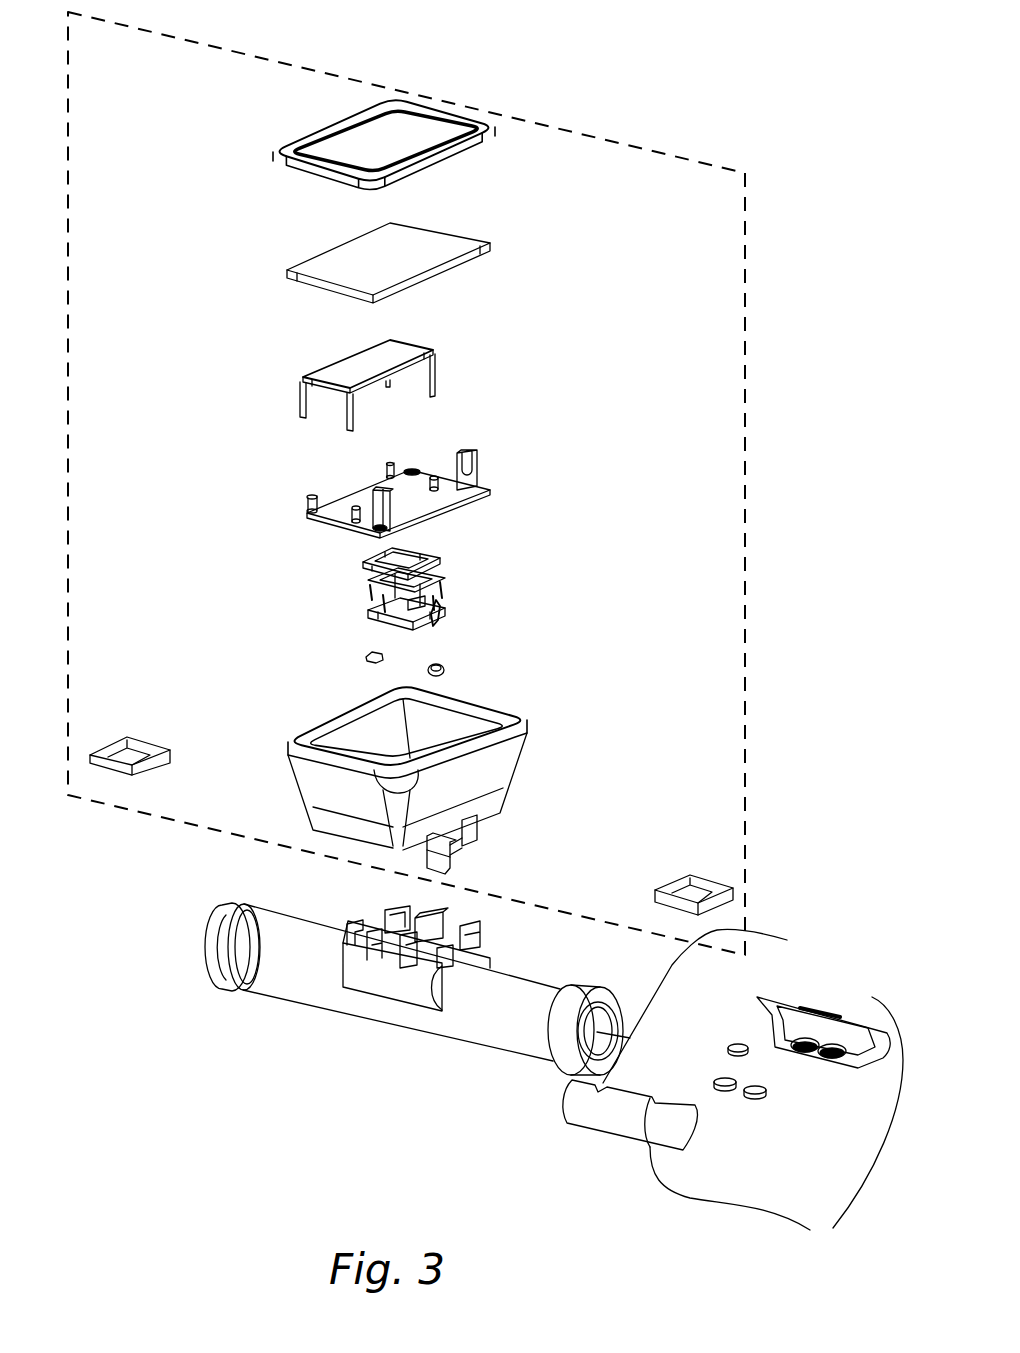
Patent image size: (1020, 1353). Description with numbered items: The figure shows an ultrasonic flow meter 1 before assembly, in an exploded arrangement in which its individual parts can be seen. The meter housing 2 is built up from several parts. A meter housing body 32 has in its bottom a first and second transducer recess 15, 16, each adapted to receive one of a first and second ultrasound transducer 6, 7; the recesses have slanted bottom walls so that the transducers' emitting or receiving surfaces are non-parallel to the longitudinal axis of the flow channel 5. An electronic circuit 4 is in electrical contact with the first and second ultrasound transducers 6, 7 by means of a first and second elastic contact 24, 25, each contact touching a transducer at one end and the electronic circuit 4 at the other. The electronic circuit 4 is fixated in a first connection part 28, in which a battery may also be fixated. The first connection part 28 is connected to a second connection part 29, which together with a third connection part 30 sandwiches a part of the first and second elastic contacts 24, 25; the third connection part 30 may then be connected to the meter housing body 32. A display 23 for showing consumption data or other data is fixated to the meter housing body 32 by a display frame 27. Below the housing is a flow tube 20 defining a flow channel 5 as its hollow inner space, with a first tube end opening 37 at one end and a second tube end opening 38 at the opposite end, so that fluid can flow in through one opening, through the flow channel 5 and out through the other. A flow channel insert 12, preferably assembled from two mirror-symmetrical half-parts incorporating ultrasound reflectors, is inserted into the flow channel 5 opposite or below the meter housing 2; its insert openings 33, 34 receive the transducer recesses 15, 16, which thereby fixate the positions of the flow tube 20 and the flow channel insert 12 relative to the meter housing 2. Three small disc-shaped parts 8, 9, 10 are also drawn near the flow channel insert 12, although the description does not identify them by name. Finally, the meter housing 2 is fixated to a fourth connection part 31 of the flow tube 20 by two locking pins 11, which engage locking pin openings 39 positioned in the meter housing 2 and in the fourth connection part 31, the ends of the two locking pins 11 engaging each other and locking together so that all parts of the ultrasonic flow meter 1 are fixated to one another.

The ultrasonic flow meter 1 is at (795, 187).
The meter housing 2 is at (746, 554).
The electronic circuit 4 is at (348, 372).
The flow channel 5 is at (630, 1038).
The first ultrasound transducer 6 is at (367, 652).
The second ultrasound transducer 7 is at (436, 668).
The seal 8 is at (727, 1090).
The seal 9 is at (738, 1046).
The seal 10 is at (753, 1095).
The locking pins 11 is at (140, 735).
The flow channel insert 12 is at (620, 1122).
The first transducer recess 15 is at (446, 785).
The second transducer recess 16 is at (457, 865).
The flow tube 20 is at (297, 968).
The display 23 is at (410, 253).
The first elastic contact 24 is at (372, 580).
The second elastic contact 25 is at (440, 598).
The display frame 27 is at (323, 133).
The first connection part 28 is at (427, 507).
The second connection part 29 is at (367, 555).
The third connection part 30 is at (445, 615).
The fourth connection part 31 is at (398, 951).
The meter housing body 32 is at (483, 773).
The insert opening 33 is at (797, 1008).
The insert opening 34 is at (776, 1126).
The first tube end opening 37 is at (360, 952).
The second tube end opening 38 is at (723, 1086).
The locking pin openings 39 is at (287, 797).